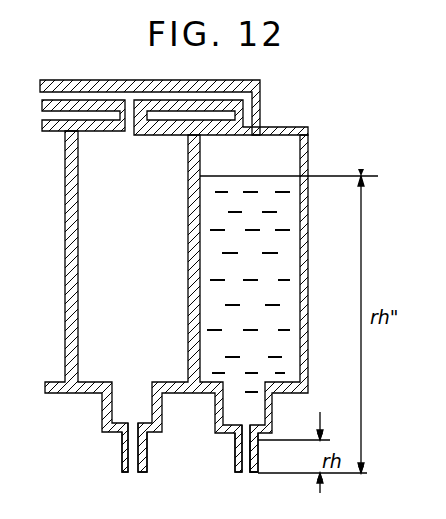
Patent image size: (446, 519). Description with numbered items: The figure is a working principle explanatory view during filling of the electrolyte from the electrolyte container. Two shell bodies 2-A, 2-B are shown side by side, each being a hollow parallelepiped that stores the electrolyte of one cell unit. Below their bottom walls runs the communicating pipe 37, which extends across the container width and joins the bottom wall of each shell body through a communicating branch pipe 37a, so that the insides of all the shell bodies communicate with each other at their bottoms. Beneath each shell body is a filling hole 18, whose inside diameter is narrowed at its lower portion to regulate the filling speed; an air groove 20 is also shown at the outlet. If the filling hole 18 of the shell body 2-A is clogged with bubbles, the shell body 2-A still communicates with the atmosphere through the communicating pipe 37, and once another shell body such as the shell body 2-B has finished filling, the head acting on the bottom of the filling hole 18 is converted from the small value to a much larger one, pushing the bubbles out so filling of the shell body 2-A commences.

The communicating pipe 37 is at (76, 84).
The communicating branch pipe 37a is at (258, 118).
The shell body 2-B is at (103, 133).
The shell body 2-A is at (308, 143).
The filling hole 18 is at (130, 458).
The air groove 20 is at (260, 443).